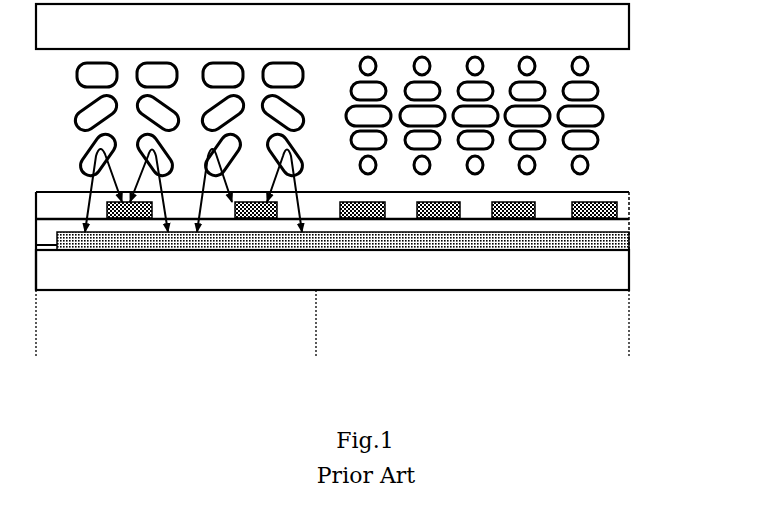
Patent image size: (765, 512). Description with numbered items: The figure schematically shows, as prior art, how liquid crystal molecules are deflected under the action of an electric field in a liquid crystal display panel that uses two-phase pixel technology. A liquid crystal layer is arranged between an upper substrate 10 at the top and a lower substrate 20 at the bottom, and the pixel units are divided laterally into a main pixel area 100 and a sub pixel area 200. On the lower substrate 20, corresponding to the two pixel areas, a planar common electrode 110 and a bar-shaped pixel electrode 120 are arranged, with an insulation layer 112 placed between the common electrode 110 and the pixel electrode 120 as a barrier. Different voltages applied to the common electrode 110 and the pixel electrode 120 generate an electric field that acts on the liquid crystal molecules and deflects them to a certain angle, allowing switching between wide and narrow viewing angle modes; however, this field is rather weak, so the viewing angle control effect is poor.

The upper substrate 10 is at (332, 26).
The lower substrate 20 is at (332, 270).
The planar common electrode 110 is at (610, 240).
The insulation layer 112 is at (610, 223).
The bar-shaped pixel electrode 120 is at (617, 203).
The main pixel area 100 is at (627, 329).
The sub pixel area 200 is at (314, 329).